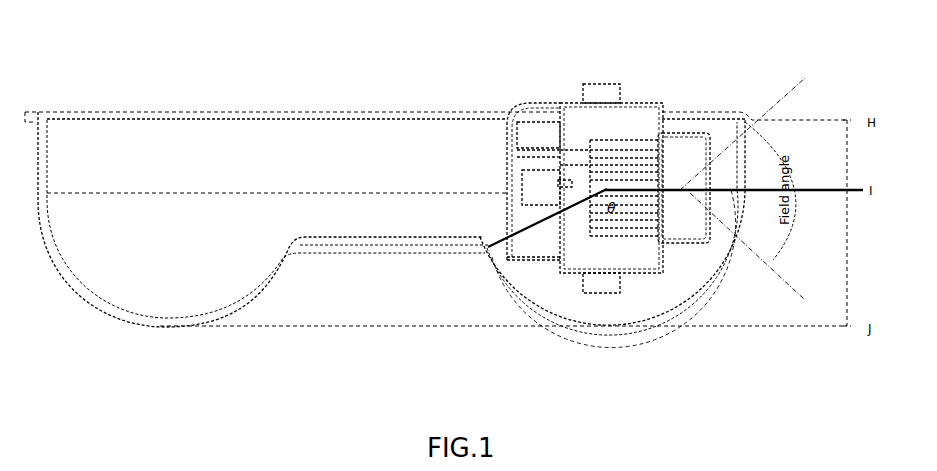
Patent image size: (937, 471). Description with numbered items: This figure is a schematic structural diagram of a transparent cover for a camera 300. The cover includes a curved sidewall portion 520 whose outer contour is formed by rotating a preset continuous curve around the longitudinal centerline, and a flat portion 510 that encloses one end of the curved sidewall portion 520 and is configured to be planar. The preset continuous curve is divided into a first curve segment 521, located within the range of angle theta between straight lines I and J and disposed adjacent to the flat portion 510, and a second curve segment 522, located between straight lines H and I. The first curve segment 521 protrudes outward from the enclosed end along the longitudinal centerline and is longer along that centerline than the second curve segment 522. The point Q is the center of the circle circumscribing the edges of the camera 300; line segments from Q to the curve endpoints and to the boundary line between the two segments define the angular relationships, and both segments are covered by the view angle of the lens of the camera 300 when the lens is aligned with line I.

The flat portion 510 is at (387, 243).
The camera 300 is at (575, 140).
The curved sidewall portion 520 is at (633, 330).
The first curve segment 521 is at (700, 287).
The second curve segment 522 is at (746, 124).
The center of the circle circumscribing the edges of the camera Q is at (632, 155).